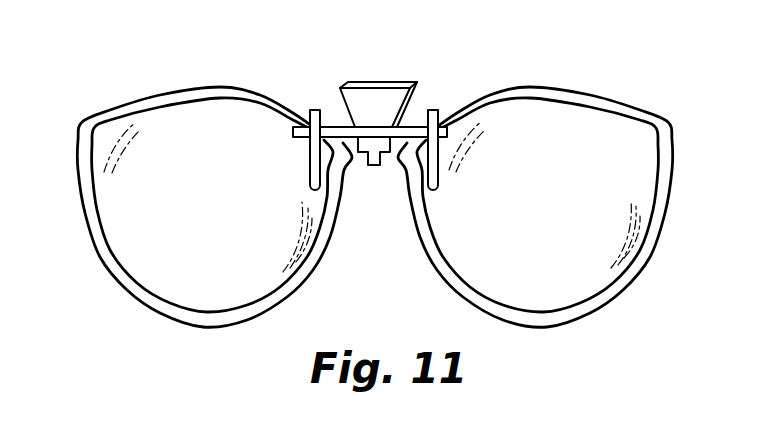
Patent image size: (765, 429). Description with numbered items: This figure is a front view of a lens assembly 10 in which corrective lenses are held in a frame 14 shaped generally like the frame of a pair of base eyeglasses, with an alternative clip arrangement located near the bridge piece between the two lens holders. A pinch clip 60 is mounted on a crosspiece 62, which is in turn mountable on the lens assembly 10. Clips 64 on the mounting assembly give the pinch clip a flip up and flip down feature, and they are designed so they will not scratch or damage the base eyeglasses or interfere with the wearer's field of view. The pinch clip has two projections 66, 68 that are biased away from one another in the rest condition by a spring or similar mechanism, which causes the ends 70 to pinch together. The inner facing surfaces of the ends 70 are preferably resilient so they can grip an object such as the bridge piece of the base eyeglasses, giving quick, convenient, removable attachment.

The lens assembly 10 is at (131, 351).
The frame 14 is at (633, 284).
The pinch clip 60 is at (429, 73).
The crosspiece 62 is at (413, 130).
The clips 64 is at (437, 184).
The projection 66 is at (345, 103).
The projection 68 is at (376, 85).
The ends 70 is at (372, 165).